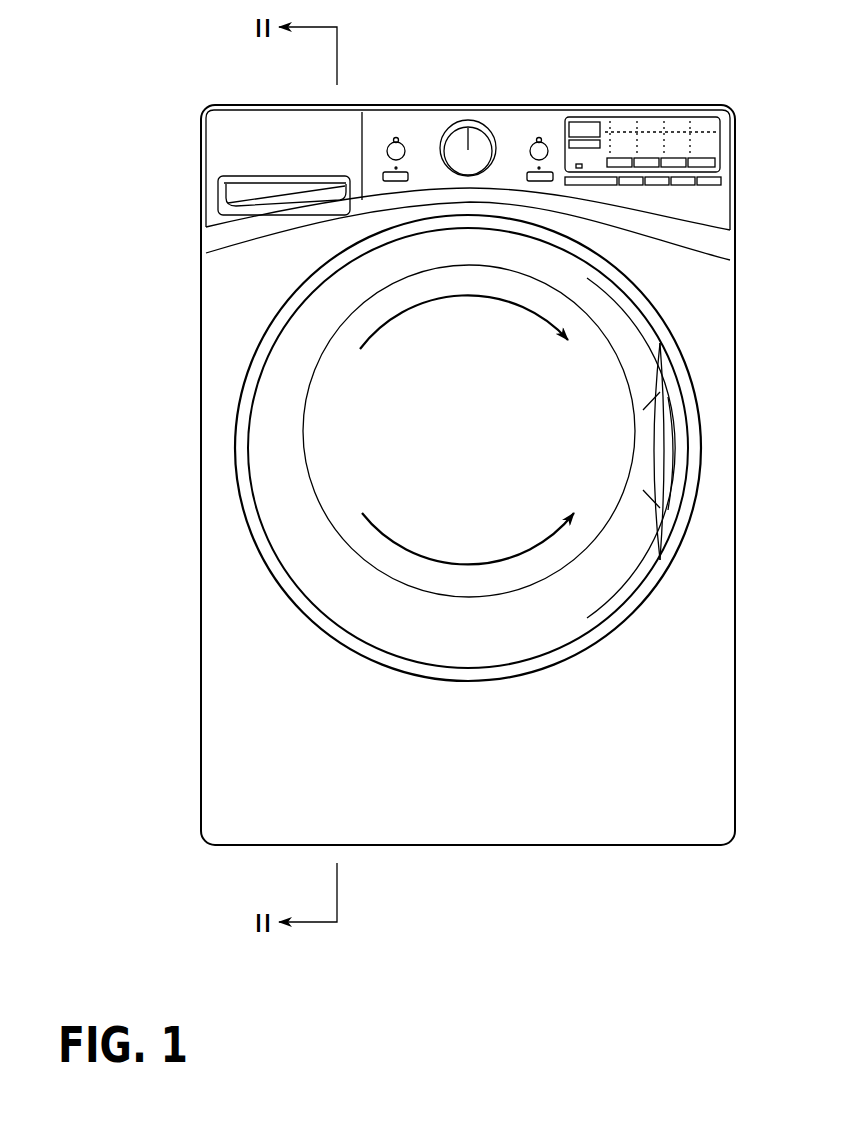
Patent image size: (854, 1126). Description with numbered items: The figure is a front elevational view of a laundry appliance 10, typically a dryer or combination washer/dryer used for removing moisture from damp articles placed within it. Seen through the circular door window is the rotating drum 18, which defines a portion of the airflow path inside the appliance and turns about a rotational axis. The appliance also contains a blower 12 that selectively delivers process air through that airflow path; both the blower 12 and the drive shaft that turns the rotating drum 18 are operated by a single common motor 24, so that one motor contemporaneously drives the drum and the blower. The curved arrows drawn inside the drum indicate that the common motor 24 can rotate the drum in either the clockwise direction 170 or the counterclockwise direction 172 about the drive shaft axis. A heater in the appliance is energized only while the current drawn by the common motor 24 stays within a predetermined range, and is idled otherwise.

The laundry appliance 10 is at (145, 330).
The blower 12 is at (290, 803).
The common motor 24 is at (248, 677).
The rotating drum 18 is at (385, 431).
The clockwise direction 170 is at (483, 295).
The counterclockwise direction 172 is at (440, 560).